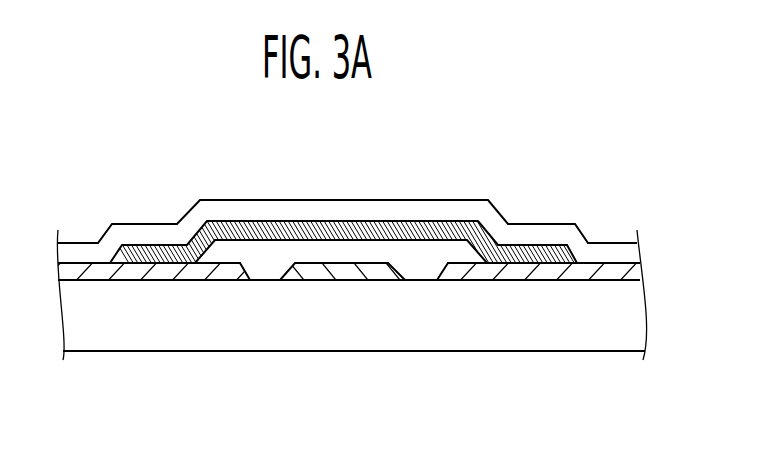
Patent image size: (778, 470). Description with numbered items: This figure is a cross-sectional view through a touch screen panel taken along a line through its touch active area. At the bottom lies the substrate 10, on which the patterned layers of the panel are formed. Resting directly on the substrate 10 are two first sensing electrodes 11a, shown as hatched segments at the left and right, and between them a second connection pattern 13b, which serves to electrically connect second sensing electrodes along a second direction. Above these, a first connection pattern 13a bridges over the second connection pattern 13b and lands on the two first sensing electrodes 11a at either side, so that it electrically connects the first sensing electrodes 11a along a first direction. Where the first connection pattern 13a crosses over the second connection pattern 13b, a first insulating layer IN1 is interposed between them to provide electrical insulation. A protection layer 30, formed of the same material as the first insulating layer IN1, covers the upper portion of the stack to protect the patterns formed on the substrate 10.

The substrate 10 is at (635, 313).
The first sensing electrodes 11a is at (150, 270).
The first connection patterns 13a is at (342, 227).
The second connection patterns 13b is at (350, 270).
The first insulating layer IN1 is at (418, 258).
The protection layer 30 is at (635, 250).